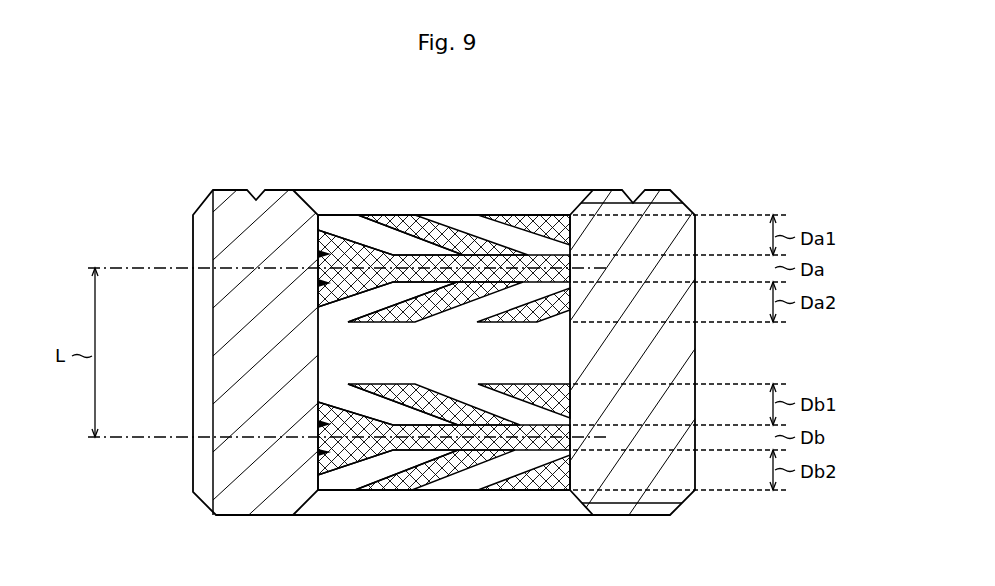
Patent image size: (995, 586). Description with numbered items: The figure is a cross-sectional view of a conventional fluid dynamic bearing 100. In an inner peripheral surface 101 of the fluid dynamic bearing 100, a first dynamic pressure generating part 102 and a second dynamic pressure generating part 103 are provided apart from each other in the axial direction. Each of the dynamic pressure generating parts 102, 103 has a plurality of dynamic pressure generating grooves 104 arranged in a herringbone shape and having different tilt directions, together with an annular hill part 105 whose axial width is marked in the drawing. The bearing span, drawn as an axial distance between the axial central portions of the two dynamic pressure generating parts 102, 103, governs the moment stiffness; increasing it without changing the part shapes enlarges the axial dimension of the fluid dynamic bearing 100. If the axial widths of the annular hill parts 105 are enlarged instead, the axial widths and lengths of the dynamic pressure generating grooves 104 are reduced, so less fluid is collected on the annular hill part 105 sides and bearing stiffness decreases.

The fluid dynamic bearing 100 is at (597, 154).
The inner peripheral surface 101 is at (532, 253).
The first dynamic pressure generating part 102 is at (466, 260).
The second dynamic pressure generating part 103 is at (492, 442).
The dynamic pressure generating groove 104 is at (361, 213).
The annular hill part 105 is at (427, 256).